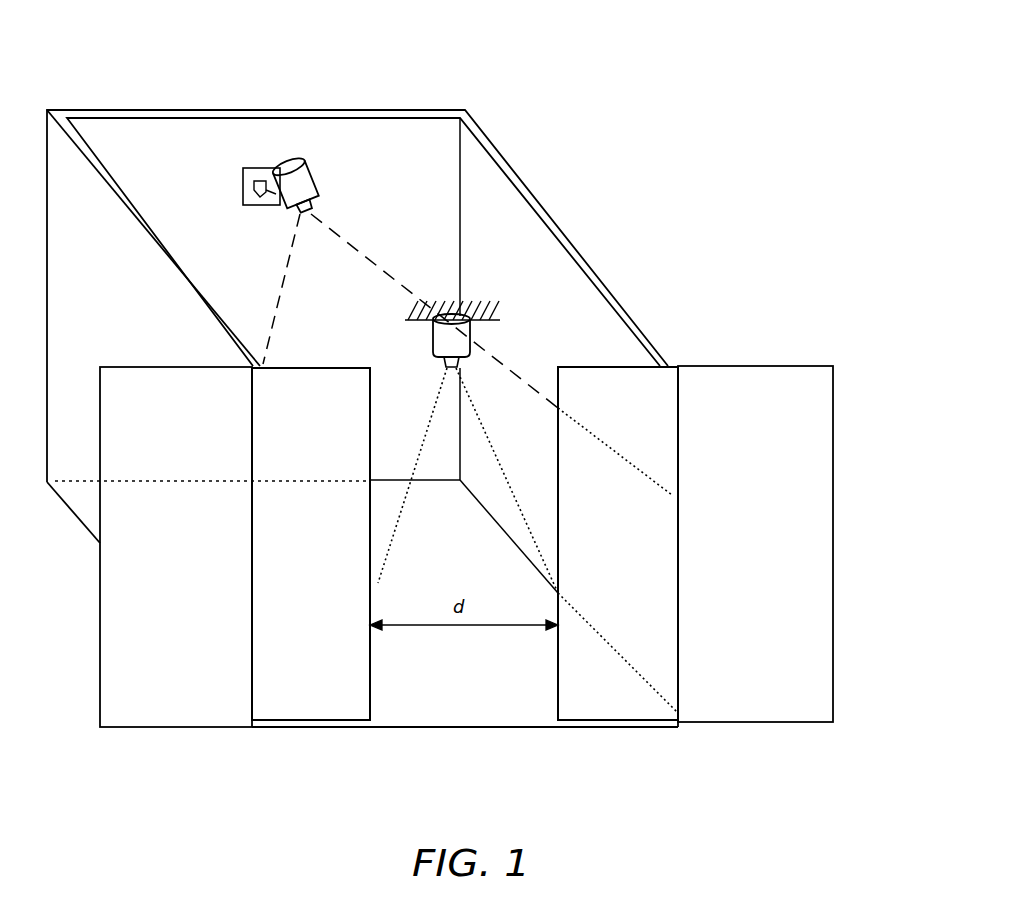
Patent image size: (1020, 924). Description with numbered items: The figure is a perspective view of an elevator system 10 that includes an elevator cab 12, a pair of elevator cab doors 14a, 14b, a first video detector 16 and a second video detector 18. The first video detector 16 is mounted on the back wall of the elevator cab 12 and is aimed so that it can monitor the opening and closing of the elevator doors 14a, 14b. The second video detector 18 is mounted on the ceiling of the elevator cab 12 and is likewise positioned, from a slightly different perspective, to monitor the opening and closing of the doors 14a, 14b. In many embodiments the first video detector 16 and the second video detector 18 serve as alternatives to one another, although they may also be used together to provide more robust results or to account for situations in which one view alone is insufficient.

The elevator system 10 is at (614, 107).
The elevator cab 12 is at (214, 117).
The elevator cab door 14a is at (303, 375).
The elevator cab door 14b is at (599, 375).
The first video detector 16 is at (300, 187).
The second video detector 18 is at (462, 343).